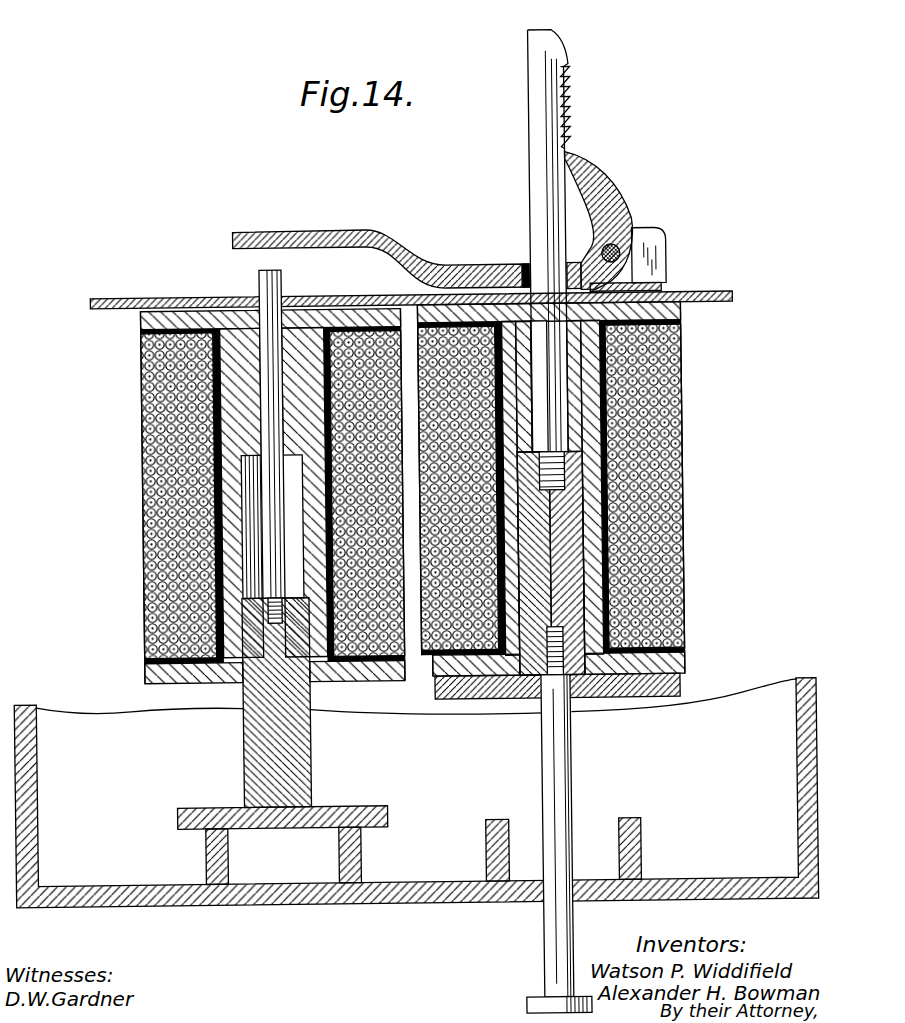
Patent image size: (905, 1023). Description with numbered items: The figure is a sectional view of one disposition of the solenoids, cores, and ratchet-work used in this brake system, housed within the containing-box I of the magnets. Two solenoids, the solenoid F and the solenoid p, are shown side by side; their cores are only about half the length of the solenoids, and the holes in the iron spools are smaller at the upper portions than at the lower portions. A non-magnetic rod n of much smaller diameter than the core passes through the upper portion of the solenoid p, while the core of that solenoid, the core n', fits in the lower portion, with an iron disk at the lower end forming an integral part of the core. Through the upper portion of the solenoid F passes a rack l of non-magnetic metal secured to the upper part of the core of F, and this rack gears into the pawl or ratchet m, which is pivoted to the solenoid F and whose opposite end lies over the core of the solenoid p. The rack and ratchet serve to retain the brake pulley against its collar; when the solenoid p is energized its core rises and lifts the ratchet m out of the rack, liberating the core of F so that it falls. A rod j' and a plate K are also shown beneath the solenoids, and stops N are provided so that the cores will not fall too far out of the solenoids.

The solenoid p is at (171, 496).
The solenoid F is at (649, 486).
The non-magnetic rod n is at (281, 429).
The core of solenoid p n' is at (281, 713).
The rack l is at (556, 240).
The pawl or ratchet m is at (606, 220).
The box I is at (92, 717).
The plate K is at (502, 702).
The rod j' is at (562, 843).
The stop N is at (203, 858).